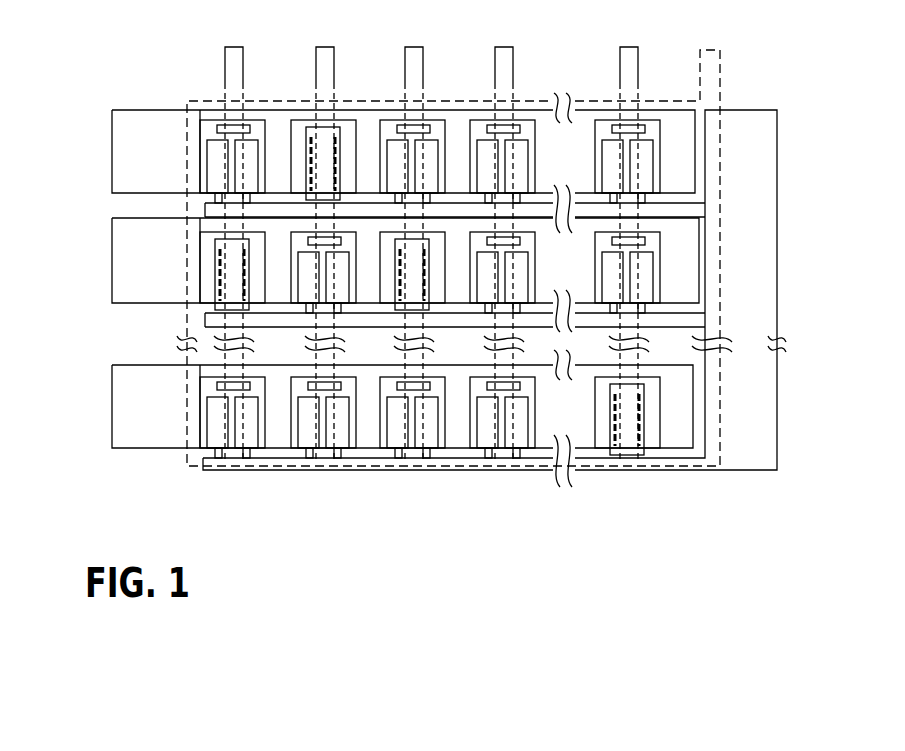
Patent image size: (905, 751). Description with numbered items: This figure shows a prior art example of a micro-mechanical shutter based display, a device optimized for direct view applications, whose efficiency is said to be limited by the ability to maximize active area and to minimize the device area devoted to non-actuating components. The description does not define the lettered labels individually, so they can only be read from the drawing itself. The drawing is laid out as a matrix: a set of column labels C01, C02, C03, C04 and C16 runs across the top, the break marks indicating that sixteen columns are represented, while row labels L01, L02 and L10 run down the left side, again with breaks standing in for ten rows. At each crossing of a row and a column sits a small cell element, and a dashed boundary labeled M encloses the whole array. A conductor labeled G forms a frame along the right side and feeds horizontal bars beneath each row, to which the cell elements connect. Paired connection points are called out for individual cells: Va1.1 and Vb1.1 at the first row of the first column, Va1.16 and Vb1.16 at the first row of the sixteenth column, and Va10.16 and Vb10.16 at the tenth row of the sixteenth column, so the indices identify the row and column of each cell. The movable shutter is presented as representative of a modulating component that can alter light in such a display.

The column line 1 C01 is at (233, 58).
The column line 2 C02 is at (324, 58).
The column line 3 C03 is at (413, 58).
The column line 4 C04 is at (503, 58).
The column line 16 C16 is at (628, 58).
The metallization / dashed outline M is at (712, 58).
The row line 1 L01 is at (133, 153).
The row line 2 L02 is at (133, 263).
The row line 10 L10 is at (133, 413).
The ground conductor G is at (752, 228).
The via a of cell (1,1) Va1.1 is at (214, 145).
The via b of cell (1,1) Vb1.1 is at (252, 145).
The via a of cell (1,16) Va1.16 is at (606, 147).
The via b of cell (1,16) Vb1.16 is at (650, 148).
The via a of cell (10,16) Va10.16 is at (607, 446).
The via b of cell (10,16) Vb10.16 is at (647, 446).